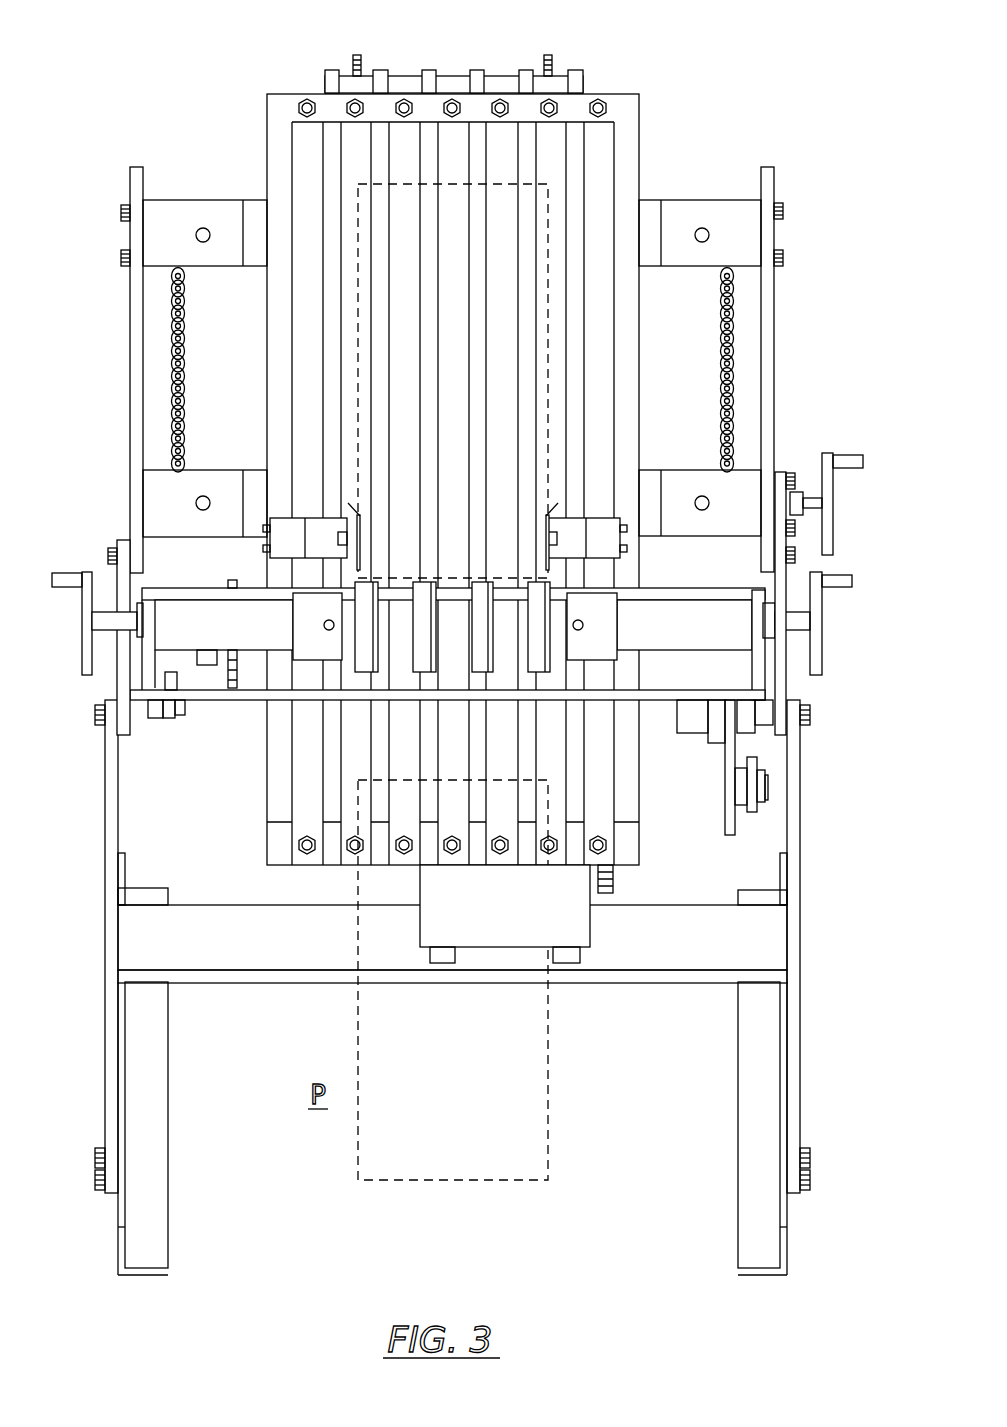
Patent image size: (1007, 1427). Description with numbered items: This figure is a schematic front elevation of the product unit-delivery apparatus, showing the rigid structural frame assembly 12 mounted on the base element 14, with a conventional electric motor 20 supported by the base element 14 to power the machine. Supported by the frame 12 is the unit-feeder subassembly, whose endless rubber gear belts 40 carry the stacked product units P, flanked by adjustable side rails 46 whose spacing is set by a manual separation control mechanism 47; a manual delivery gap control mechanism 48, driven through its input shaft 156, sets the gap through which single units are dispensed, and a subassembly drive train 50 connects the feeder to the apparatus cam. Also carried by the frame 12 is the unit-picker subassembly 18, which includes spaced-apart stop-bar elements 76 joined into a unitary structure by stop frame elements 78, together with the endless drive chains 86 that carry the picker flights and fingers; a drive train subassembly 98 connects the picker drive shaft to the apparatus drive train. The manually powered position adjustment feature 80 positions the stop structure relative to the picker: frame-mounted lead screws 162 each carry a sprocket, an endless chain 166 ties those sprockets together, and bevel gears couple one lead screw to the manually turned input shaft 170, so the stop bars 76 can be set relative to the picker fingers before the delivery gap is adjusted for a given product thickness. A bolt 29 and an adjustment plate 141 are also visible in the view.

The structural frame assembly 12 is at (136, 340).
The base element 14 is at (150, 1236).
The unit-picker subassembly 18 is at (670, 93).
The electric motor 20 is at (446, 929).
The bolt 29 is at (645, 881).
The endless rubber gear belts 40 is at (364, 642).
The adjustable side rails 46 is at (316, 545).
The manual separation control mechanism 47 is at (824, 650).
The manual delivery gap control mechanism 48 is at (81, 620).
The subassembly drive train 50 is at (729, 782).
The stop-bar elements 76 is at (612, 168).
The stop frame elements 78 is at (322, 102).
The position adjustment feature 80 is at (736, 380).
The endless drive chains 86 is at (358, 54).
The drive train subassembly 98 is at (160, 720).
The adjustment plate 141 is at (793, 613).
The input shaft 156 is at (104, 600).
The lead screws 162 is at (203, 244).
The endless chain 166 is at (186, 392).
The input shaft 170 is at (812, 500).